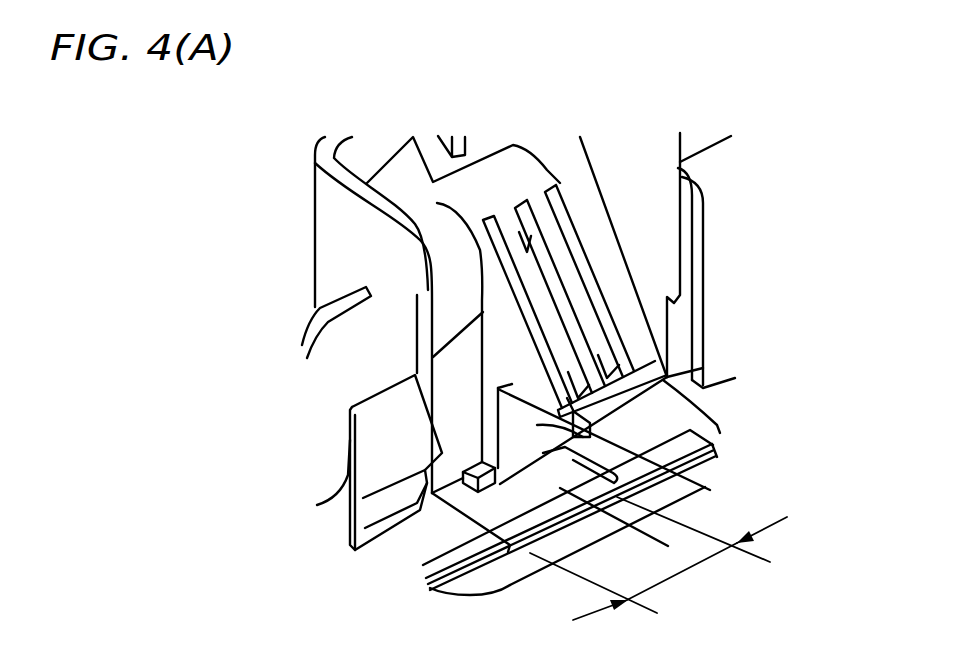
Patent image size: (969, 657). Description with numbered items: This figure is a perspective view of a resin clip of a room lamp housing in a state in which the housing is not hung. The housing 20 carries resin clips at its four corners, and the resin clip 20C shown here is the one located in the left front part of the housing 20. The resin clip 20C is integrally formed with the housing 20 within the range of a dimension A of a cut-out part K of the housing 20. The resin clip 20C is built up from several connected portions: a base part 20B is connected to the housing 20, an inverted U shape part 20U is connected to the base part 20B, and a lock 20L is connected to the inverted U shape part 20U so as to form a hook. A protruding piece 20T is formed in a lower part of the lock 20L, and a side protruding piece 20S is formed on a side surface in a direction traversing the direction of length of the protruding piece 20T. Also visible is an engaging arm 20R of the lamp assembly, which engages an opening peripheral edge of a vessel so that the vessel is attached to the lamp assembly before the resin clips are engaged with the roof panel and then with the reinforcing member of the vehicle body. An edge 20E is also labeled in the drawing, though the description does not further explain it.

The housing 20 is at (300, 318).
The base part 20B is at (400, 192).
The inverted U shape part 20U is at (498, 182).
The resin clip 20C is at (579, 177).
The lock 20L is at (563, 313).
The engaging arm 20R is at (393, 440).
The side protruding piece 20S is at (456, 488).
The front edge 20E is at (543, 453).
The protruding piece 20T is at (703, 482).
The cut-out part K is at (582, 472).
The dimension A is at (766, 536).